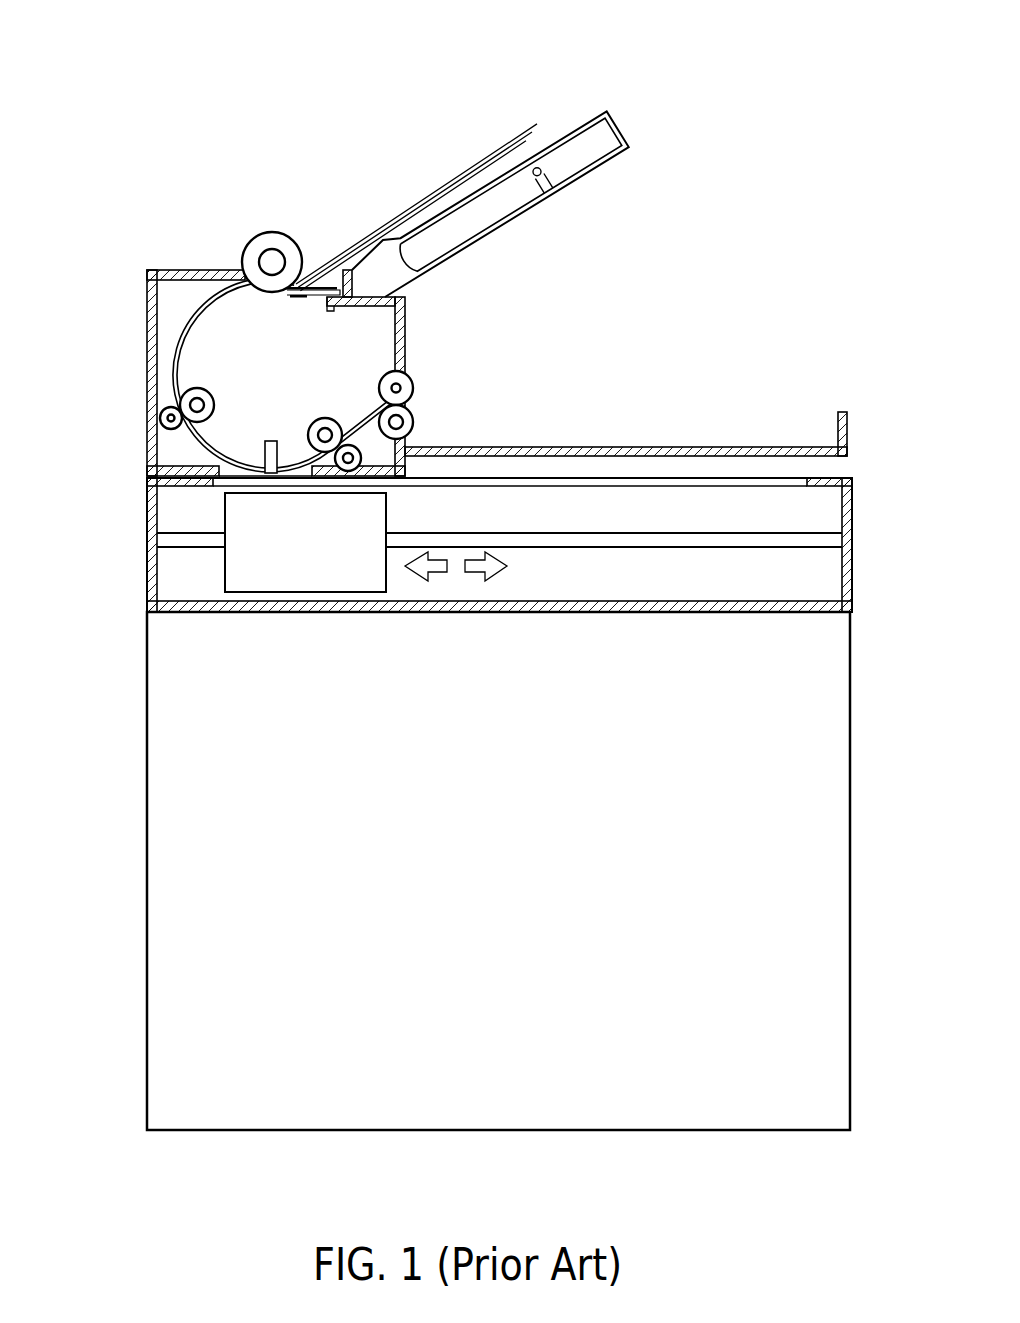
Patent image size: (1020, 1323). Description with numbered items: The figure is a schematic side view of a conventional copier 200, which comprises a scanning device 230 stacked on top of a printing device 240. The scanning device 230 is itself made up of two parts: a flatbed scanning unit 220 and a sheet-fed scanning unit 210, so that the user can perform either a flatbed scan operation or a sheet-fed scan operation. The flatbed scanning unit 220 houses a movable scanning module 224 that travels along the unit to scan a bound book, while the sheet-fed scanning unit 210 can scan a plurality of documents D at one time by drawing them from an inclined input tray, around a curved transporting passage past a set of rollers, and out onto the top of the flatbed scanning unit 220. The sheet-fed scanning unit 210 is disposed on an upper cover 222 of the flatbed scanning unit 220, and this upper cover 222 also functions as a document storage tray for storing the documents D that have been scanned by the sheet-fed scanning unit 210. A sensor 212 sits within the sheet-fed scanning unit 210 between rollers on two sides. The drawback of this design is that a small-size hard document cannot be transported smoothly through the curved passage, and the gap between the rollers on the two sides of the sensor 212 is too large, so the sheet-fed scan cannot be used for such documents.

The copier 200 is at (548, 33).
The sheet-fed scanning unit 210 is at (147, 293).
The sensor 212 is at (275, 440).
The flatbed scanning unit 220 is at (140, 525).
The upper cover 222 is at (780, 447).
The movable scanning module 224 is at (228, 583).
The scanning device 230 is at (800, 28).
The printing device 240 is at (143, 683).
The documents D is at (415, 200).